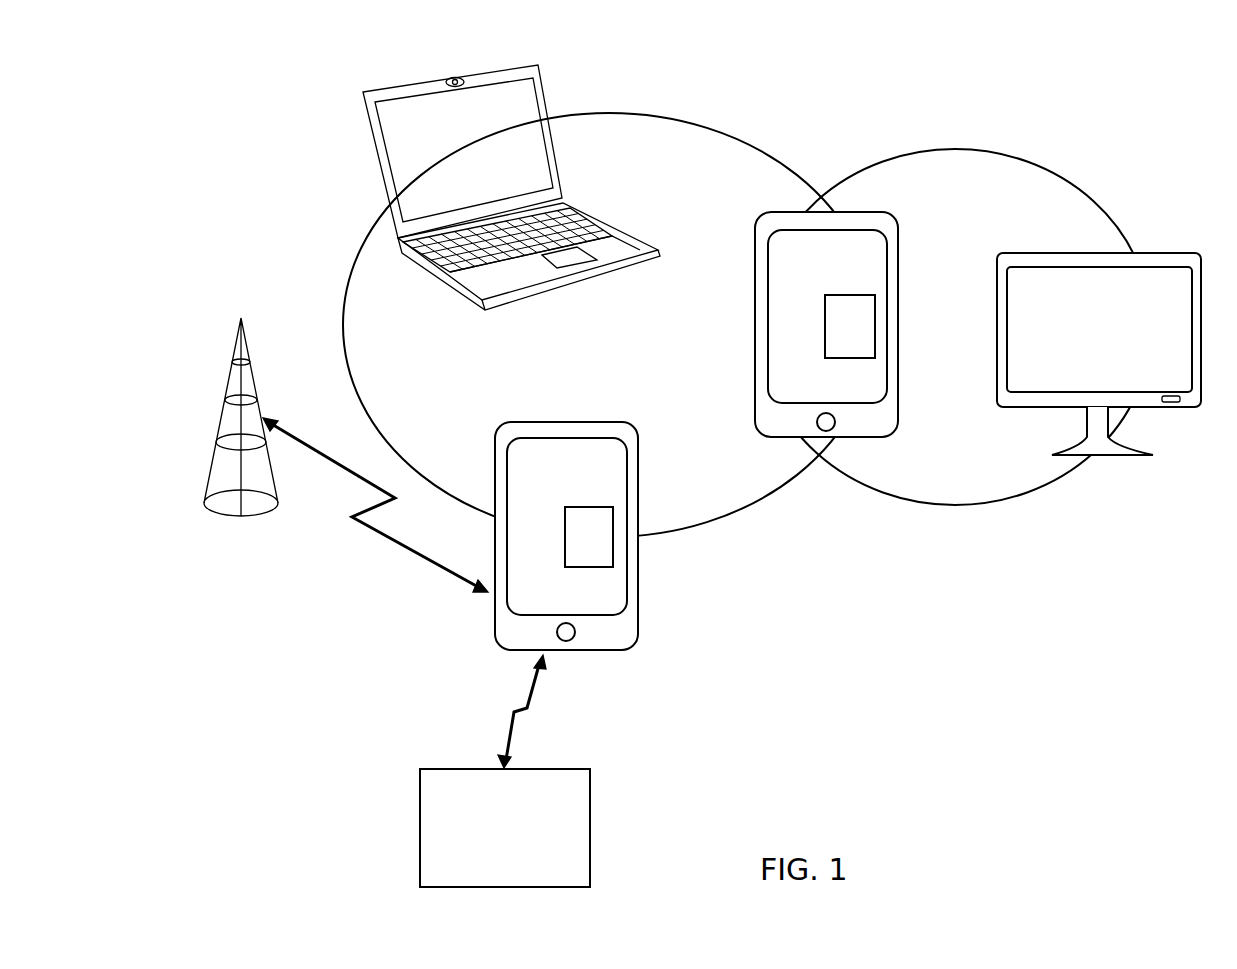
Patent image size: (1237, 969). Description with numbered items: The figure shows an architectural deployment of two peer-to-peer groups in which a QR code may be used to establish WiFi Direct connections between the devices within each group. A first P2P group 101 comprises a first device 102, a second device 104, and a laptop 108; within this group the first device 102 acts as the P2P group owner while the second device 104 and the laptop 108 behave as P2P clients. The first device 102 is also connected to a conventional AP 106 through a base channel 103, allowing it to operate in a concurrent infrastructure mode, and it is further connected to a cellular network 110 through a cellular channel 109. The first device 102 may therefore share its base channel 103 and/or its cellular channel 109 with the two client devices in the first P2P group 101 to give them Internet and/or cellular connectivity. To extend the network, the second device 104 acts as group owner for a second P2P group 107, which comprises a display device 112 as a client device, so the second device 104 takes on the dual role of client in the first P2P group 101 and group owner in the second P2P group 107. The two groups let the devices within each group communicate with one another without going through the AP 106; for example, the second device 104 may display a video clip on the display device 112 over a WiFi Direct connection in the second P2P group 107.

The first P2P group 101 is at (700, 127).
The first device 102 is at (638, 585).
The base channel 103 is at (522, 726).
The second device 104 is at (755, 330).
The AP 106 is at (447, 769).
The second P2P group 107 is at (948, 148).
The laptop 108 is at (538, 66).
The cellular channel 109 is at (410, 550).
The cellular network 110 is at (241, 318).
The display device 112 is at (1157, 252).